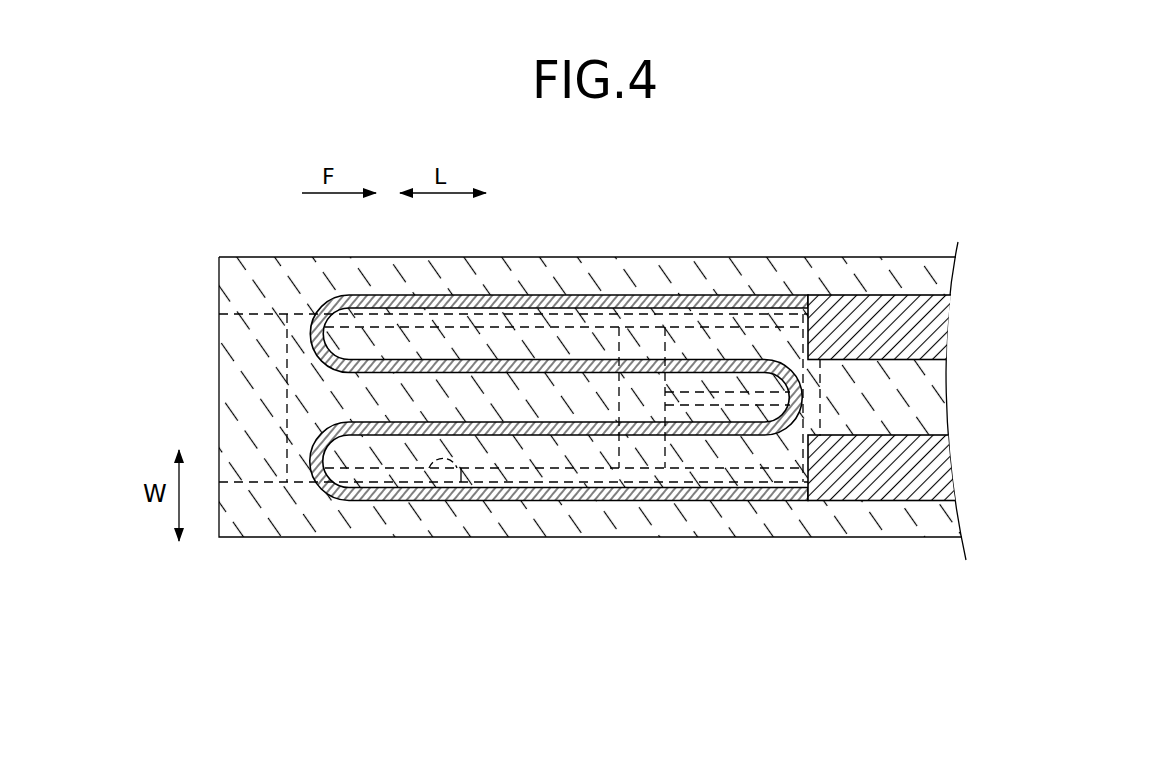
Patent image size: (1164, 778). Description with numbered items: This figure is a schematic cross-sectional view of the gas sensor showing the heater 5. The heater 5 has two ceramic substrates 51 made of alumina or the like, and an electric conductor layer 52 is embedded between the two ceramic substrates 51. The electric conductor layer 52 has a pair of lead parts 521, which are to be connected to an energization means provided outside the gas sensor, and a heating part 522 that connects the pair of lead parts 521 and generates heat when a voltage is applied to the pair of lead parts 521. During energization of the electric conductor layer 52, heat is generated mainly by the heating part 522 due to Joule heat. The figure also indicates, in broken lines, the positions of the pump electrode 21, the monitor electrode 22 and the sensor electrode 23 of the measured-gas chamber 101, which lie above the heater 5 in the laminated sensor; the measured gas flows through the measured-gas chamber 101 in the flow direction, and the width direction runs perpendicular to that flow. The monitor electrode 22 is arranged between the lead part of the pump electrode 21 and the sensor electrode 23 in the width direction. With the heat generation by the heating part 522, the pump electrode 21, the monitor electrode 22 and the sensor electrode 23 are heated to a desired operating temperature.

The heater 5 is at (898, 553).
The ceramic substrates 51 is at (790, 517).
The electric conductor layer 52 is at (848, 292).
The lead parts 521 is at (908, 322).
The heating part 522 is at (543, 297).
The monitor electrode 22 is at (703, 470).
The sensor electrode 23 is at (727, 327).
The pump electrode 21 is at (525, 470).
The measured-gas chamber 101 is at (427, 483).